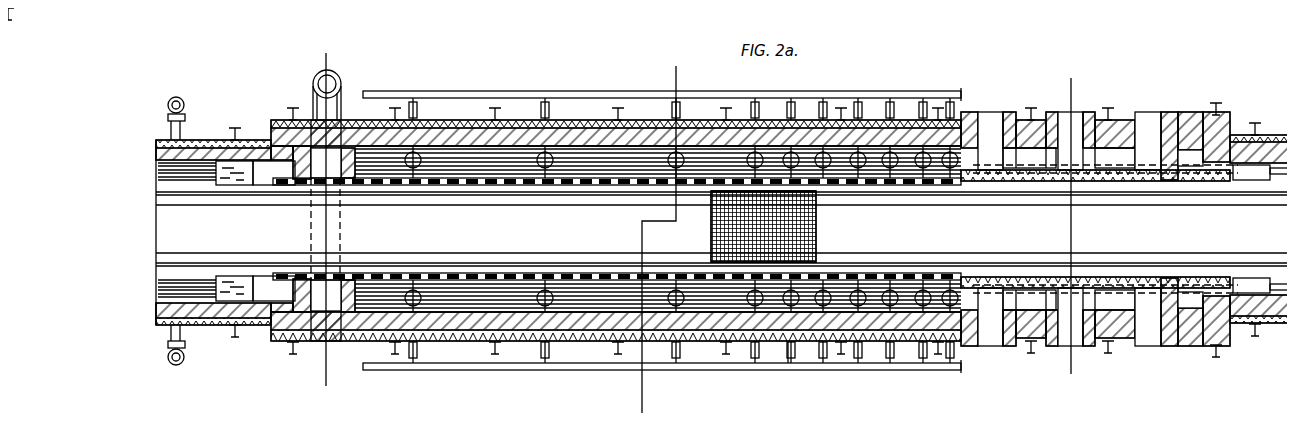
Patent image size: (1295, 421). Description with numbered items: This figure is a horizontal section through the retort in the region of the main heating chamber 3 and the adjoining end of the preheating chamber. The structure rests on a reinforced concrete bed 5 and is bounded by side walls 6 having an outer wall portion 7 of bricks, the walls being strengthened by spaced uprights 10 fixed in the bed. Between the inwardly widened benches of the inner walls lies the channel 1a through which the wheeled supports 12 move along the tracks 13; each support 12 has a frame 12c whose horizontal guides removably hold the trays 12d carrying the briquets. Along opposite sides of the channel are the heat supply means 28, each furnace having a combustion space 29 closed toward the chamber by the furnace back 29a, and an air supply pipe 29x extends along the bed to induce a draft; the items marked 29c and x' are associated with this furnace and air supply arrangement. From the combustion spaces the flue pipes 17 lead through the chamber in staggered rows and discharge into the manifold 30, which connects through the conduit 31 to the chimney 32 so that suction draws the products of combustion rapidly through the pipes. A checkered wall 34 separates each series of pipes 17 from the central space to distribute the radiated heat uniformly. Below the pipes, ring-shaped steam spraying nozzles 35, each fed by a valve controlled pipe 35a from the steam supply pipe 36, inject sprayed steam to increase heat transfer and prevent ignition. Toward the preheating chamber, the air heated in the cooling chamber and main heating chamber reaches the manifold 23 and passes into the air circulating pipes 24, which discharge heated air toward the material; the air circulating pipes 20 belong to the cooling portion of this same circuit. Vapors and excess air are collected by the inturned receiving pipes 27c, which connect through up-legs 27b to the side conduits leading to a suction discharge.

The main heating chamber 3 is at (721, 232).
The bed or foundation 5 is at (318, 47).
The side walls 6 is at (668, 60).
The outer wall portion 7 is at (1063, 72).
The uprights 10 is at (604, 103).
The wheeled supports or trucks 12 is at (753, 226).
The frame 12c is at (812, 236).
The trays 12d is at (808, 222).
The tracks 13 is at (385, 198).
The flue pipes 17 is at (482, 178).
The channel 1a is at (543, 225).
The air circulating pipes 20 is at (1280, 296).
The manifold 23 is at (238, 180).
The air circulating pipes 24 is at (150, 286).
The up-legs 27b is at (170, 358).
The receiving pipes 27c is at (163, 326).
The heat supply means 28 is at (1212, 206).
The combustion space 29 is at (1165, 176).
The furnace back 29a is at (1141, 270).
The flange bolt 29c is at (1015, 172).
The air supply pipe 29x is at (1202, 340).
The discharge manifold or space 30 is at (320, 148).
The conduit 31 is at (303, 224).
The chimney 32 is at (305, 80).
The checkered wall 34 is at (438, 180).
The steam spraying nozzles 35 is at (545, 160).
The valve controlled pipe 35a is at (685, 336).
The steam supply pipe 36 is at (455, 84).
The bolt axis x' is at (1092, 229).